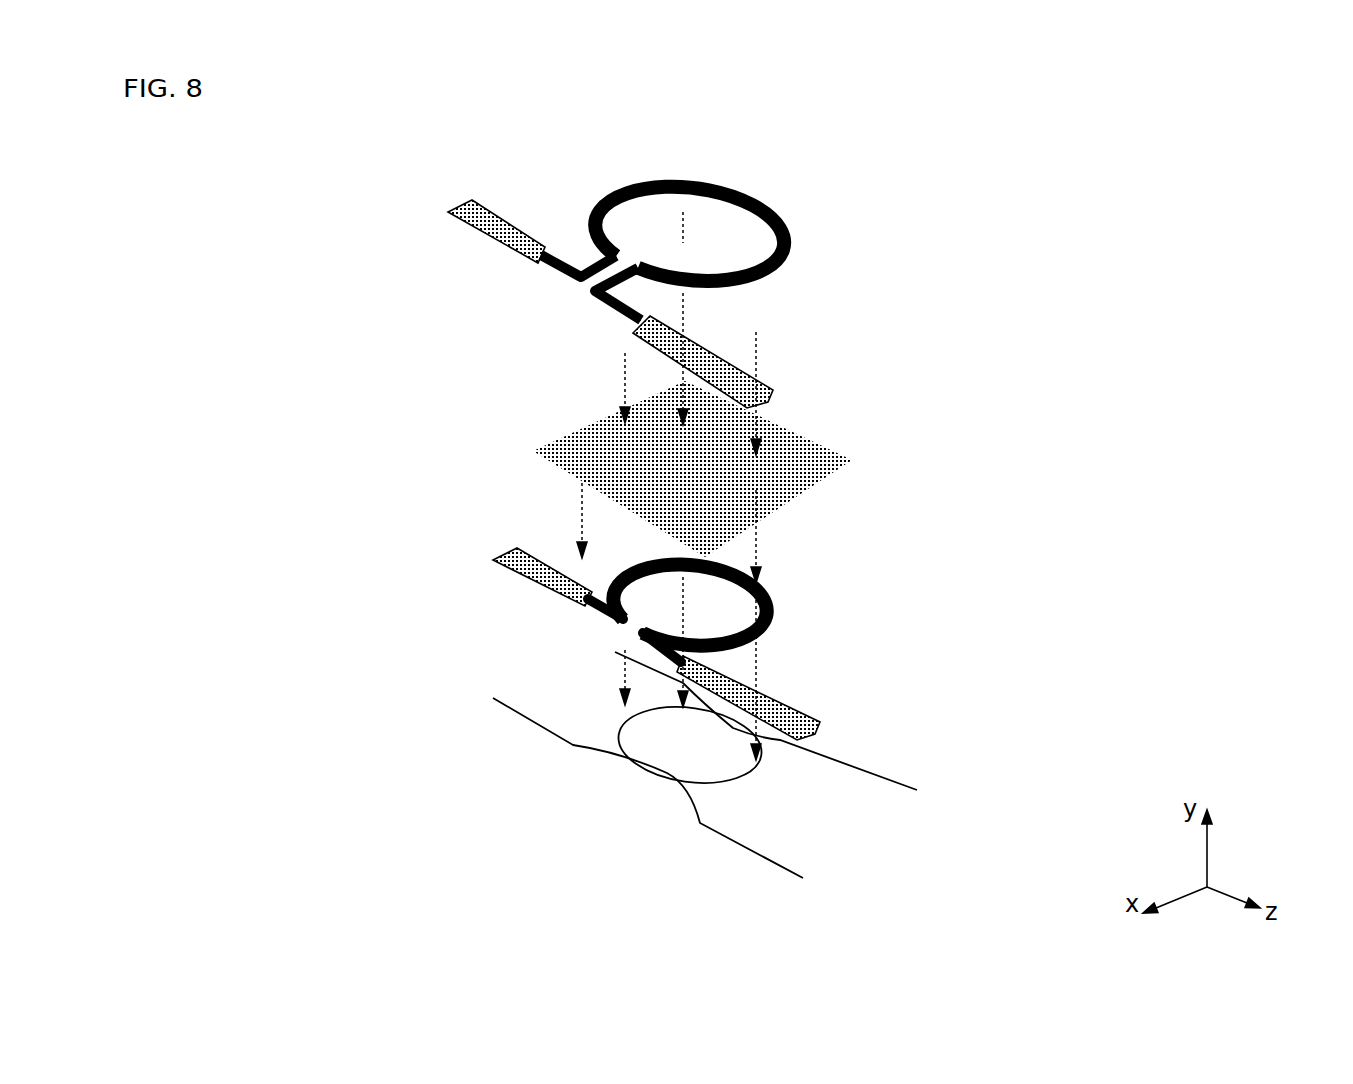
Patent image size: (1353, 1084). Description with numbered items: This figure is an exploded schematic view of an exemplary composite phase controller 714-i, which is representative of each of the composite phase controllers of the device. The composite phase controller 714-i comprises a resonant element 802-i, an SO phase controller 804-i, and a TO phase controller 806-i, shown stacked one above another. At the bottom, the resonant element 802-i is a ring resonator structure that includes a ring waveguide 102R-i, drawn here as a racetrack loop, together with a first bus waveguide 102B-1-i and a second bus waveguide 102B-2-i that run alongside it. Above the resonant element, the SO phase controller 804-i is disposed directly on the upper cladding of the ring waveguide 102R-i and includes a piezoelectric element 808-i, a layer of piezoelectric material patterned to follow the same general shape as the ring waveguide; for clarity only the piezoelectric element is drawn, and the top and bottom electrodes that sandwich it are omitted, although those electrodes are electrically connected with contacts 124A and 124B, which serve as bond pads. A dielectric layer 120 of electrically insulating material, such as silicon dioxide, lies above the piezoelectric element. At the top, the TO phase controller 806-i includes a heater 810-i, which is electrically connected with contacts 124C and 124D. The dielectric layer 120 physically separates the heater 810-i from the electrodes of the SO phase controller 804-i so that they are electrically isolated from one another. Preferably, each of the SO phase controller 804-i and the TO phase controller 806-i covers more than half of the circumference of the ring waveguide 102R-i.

The composite phase controller 714-i is at (263, 195).
The TO phase controller 806-i is at (527, 313).
The heater 810-i is at (780, 259).
The contact 124C is at (463, 228).
The contact 124D is at (755, 373).
The dielectric layer 120 is at (855, 462).
The SO phase controller 804-i is at (470, 524).
The piezoelectric element 808-i is at (773, 612).
The contact 124A is at (557, 587).
The contact 124B is at (803, 712).
The resonant element 802-i is at (435, 664).
The ring waveguide 102R-i is at (753, 772).
The bus waveguide 102B-1-i is at (573, 747).
The bus waveguide 102B-2-i is at (885, 773).